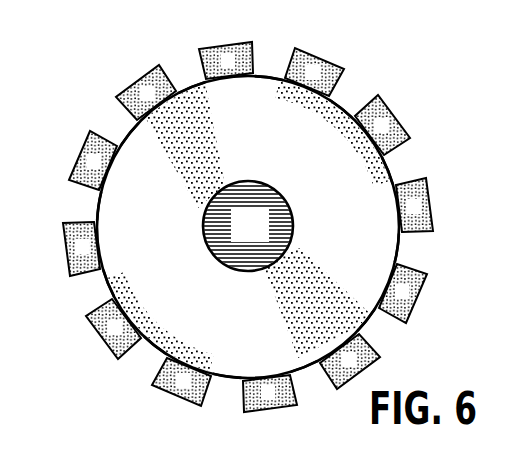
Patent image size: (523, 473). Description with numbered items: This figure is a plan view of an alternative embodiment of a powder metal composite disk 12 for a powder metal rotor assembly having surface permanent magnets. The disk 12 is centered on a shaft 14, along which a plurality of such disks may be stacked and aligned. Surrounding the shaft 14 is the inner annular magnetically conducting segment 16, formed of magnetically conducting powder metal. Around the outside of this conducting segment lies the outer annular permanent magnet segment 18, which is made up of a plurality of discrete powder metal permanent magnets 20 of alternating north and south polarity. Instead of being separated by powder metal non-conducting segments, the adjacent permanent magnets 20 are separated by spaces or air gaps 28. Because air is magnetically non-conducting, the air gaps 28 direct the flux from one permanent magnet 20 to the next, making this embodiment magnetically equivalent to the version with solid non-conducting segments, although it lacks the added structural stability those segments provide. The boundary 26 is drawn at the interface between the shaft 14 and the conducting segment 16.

The powder metal composite disk 12 is at (251, 208).
The shaft 14 is at (233, 237).
The inner annular magnetically conducting segment 16 is at (160, 274).
The outer annular permanent magnet segment 18 is at (77, 150).
The alternating polarity permanent magnets 20 is at (321, 56).
The shaft bore 26 is at (291, 235).
The air gaps 28 is at (272, 62).